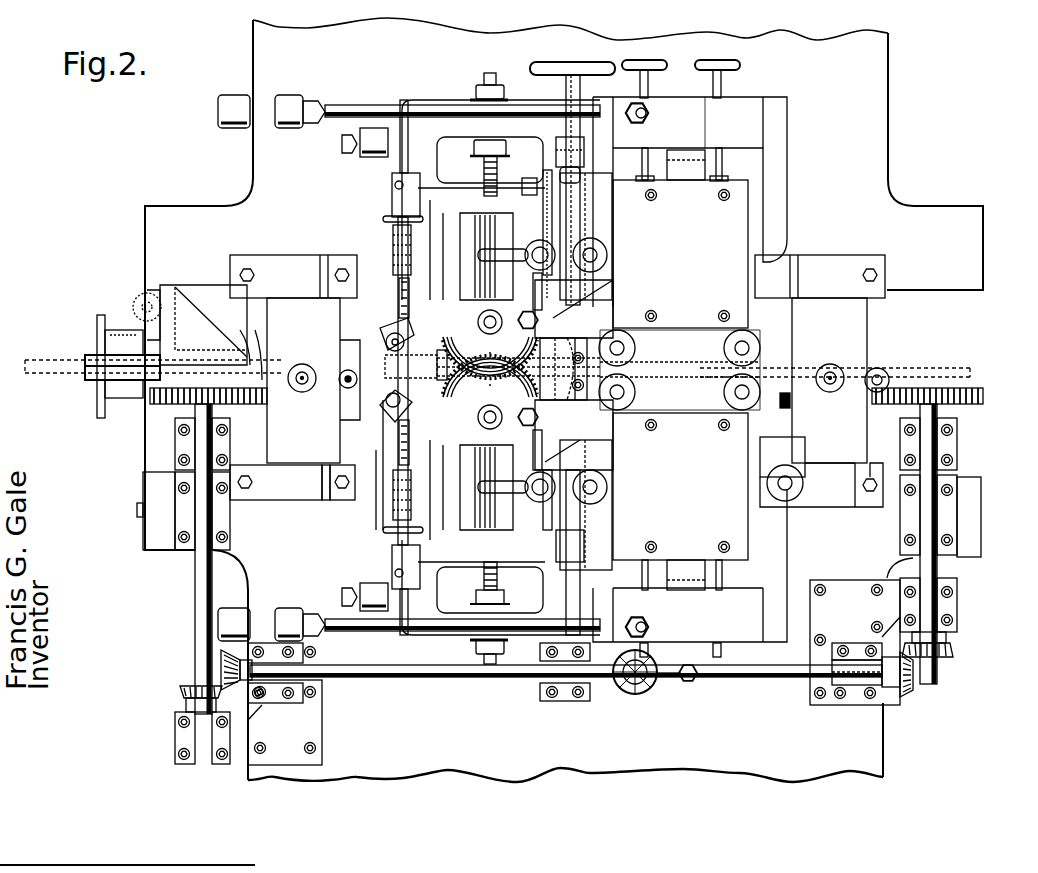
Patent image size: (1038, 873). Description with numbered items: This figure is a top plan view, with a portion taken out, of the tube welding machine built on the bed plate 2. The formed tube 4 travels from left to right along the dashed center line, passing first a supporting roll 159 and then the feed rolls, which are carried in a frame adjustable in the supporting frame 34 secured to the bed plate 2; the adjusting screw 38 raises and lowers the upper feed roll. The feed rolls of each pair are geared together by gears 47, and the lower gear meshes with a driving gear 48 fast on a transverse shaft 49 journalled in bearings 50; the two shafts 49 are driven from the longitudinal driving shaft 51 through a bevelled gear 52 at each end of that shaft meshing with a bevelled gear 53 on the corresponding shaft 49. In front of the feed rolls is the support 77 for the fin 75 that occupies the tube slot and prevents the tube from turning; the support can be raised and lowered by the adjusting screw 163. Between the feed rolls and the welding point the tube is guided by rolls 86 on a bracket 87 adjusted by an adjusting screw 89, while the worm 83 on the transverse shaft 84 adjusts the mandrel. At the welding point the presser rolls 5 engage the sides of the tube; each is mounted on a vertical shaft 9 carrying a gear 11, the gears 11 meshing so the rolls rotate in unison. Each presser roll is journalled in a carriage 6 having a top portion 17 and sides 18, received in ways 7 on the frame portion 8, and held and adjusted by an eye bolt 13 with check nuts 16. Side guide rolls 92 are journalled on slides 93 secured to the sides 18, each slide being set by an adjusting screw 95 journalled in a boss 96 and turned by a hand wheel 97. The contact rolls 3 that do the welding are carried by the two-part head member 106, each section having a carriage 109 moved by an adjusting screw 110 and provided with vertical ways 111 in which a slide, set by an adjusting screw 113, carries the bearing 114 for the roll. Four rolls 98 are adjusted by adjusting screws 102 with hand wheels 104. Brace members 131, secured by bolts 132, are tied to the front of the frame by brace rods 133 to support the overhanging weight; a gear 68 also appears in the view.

The bed plate 2 is at (875, 152).
The contact rolls 3 is at (578, 336).
The formed tube 4 is at (57, 360).
The presser rolls 5 is at (470, 340).
The carriage 6 is at (450, 192).
The ways 7 is at (412, 175).
The frame portion 8 is at (445, 122).
The vertical shaft 9 is at (490, 324).
The gear 11 is at (446, 300).
The eye bolt 13 is at (498, 165).
The check nuts 16 is at (483, 90).
The top portion 17 is at (498, 328).
The sides 18 is at (430, 222).
The supporting frame 34 is at (280, 476).
The adjusting screw 38 is at (301, 372).
The gears 47 is at (786, 408).
The driving gear 48 is at (170, 405).
The transverse shaft 49 is at (197, 573).
The bearings 50 is at (185, 450).
The driving shaft 51 is at (468, 678).
The bevelled gear 52 is at (218, 658).
The bevelled gear 53 is at (185, 686).
The gear 68 is at (638, 695).
The supporting fin 75 is at (247, 350).
The support 77 is at (196, 360).
The worm 83 is at (386, 340).
The transverse shaft 84 is at (381, 508).
The guide rolls 86 is at (414, 374).
The bracket 87 is at (355, 352).
The adjusting screw 89 is at (342, 386).
The side guide rolls 92 is at (392, 330).
The slide 93 is at (408, 300).
The adjusting screw 95 is at (395, 265).
The boss 96 is at (395, 248).
The hand wheel 97 is at (390, 222).
The rolls 98 is at (640, 392).
The adjusting screw 102 is at (660, 160).
The hand wheel 104 is at (716, 62).
The head member 106 is at (680, 370).
The carriage 109 is at (560, 305).
The adjusting screw 110 is at (566, 95).
The vertical ways 111 is at (548, 210).
The adjusting screw 113 is at (536, 252).
The bearing 114 is at (478, 218).
The brace members 131 is at (744, 100).
The bolts 132 is at (688, 680).
The brace rods 133 is at (355, 108).
The supporting roll 159 is at (90, 358).
The adjusting screw 163 is at (145, 300).